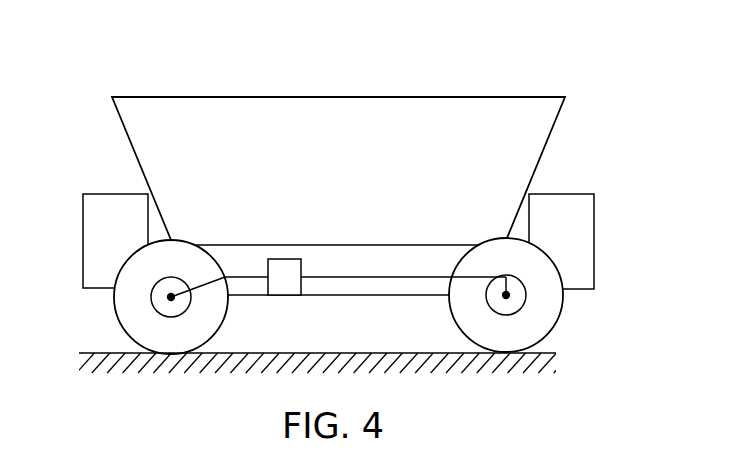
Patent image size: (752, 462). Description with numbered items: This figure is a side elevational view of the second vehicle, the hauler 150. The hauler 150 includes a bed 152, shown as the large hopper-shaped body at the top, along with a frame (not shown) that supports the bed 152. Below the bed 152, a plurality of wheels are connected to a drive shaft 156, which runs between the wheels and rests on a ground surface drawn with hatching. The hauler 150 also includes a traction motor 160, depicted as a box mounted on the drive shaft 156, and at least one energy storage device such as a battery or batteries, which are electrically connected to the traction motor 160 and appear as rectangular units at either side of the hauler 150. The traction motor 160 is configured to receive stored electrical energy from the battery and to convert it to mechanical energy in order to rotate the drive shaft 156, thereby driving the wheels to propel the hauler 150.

The hauler 150 is at (448, 46).
The bed 152 is at (188, 113).
The drive shaft 156 is at (402, 275).
The traction motor 160 is at (285, 270).